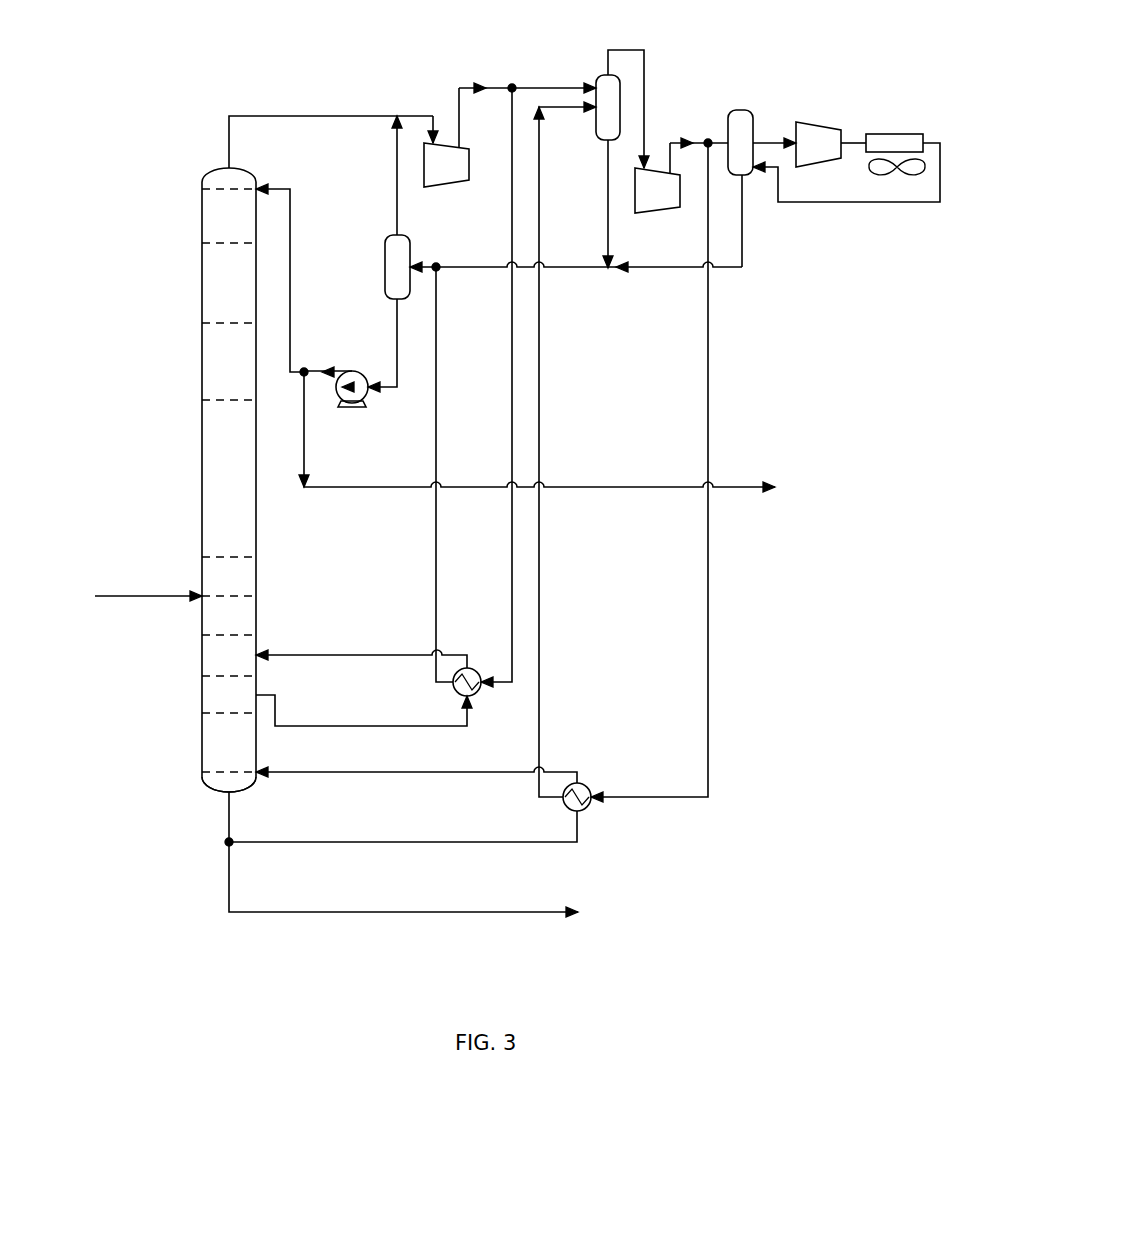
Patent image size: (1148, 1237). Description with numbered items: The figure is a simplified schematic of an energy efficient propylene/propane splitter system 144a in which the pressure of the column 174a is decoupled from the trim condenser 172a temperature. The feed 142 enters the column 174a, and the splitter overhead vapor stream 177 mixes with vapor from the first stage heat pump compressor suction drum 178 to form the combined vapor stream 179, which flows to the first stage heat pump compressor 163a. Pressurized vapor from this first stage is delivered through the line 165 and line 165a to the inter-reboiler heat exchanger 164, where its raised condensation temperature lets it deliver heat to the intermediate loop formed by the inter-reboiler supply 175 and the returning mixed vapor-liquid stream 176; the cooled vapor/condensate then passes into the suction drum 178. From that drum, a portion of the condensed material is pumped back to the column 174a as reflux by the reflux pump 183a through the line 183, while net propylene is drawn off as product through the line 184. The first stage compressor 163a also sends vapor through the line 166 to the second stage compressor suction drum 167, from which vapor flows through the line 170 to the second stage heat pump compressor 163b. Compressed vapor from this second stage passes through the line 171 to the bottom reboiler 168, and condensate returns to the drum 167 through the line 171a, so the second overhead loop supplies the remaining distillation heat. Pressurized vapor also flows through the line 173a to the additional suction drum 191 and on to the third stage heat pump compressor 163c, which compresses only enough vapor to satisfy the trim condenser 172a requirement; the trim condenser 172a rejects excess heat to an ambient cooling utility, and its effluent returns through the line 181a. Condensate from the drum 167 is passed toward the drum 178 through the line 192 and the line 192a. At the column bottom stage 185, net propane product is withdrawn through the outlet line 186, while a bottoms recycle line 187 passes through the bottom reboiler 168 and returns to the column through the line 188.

The feed 142 is at (142, 594).
The splitter system 144a is at (185, 365).
The first stage heat pump compressor 163a is at (448, 192).
The second stage heat pump compressor 163b is at (658, 216).
The third stage heat pump compressor 163c is at (818, 121).
The inter-reboiler heat exchanger 164 is at (477, 694).
The line 165 is at (511, 387).
The line 165a is at (437, 447).
The line 166 is at (522, 86).
The second stage compressor suction drum 167 is at (598, 74).
The bottom reboiler 168 is at (588, 784).
The line 170 is at (630, 48).
The line 171 is at (710, 643).
The line 171a is at (542, 614).
The trim condenser 172a is at (895, 133).
The line 173a is at (722, 141).
The column 174a is at (202, 480).
The inter-reboiler supply 175 is at (361, 724).
The mixed vapor-liquid stream 176 is at (361, 653).
The splitter overhead vapor stream 177 is at (316, 114).
The first stage heat pump compressor suction drum 178 is at (385, 236).
The combined vapor stream 179 is at (416, 114).
The line 181a is at (865, 205).
The line 183 is at (291, 280).
The reflux pump 183a is at (352, 370).
The line 184 is at (593, 485).
The splitter column bottom stage 185 is at (214, 791).
The outlet line 186 is at (405, 915).
The bottoms recycle line 187 is at (405, 845).
The line 188 is at (405, 775).
The suction drum 191 is at (742, 108).
The line 192 is at (607, 201).
The line 192a is at (662, 270).